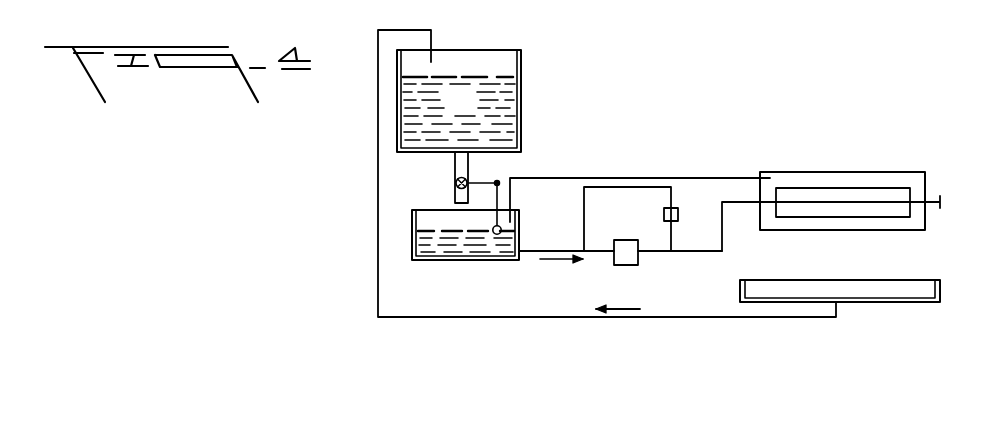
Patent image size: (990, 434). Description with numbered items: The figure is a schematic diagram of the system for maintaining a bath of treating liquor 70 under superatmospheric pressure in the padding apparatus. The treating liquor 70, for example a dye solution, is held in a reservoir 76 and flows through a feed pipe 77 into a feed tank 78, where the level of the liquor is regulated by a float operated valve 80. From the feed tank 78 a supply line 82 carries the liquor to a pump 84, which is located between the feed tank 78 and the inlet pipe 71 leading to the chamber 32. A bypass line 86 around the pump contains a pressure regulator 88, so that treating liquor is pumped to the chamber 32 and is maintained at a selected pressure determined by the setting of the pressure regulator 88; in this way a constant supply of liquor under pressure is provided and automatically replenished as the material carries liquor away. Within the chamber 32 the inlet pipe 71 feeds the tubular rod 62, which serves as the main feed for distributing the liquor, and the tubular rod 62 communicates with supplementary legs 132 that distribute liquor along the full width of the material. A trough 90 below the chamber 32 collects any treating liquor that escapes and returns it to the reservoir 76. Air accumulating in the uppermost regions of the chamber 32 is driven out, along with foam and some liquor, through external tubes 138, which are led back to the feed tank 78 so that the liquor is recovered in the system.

The chamber 32 is at (920, 175).
The tubular rod 62 is at (817, 201).
The treating liquor 70 is at (459, 108).
The inlet pipe 71 is at (722, 230).
The reservoir 76 is at (521, 97).
The feed pipe 77 is at (468, 182).
The feed tank 78 is at (448, 260).
The float operated valve 80 is at (456, 184).
The supply line 82 is at (557, 250).
The pump 84 is at (630, 253).
The bypass line 86 is at (584, 232).
The pressure regulator 88 is at (673, 208).
The trough 90 is at (907, 290).
The supplementary legs 132 is at (862, 188).
The external tubes 138 is at (632, 178).